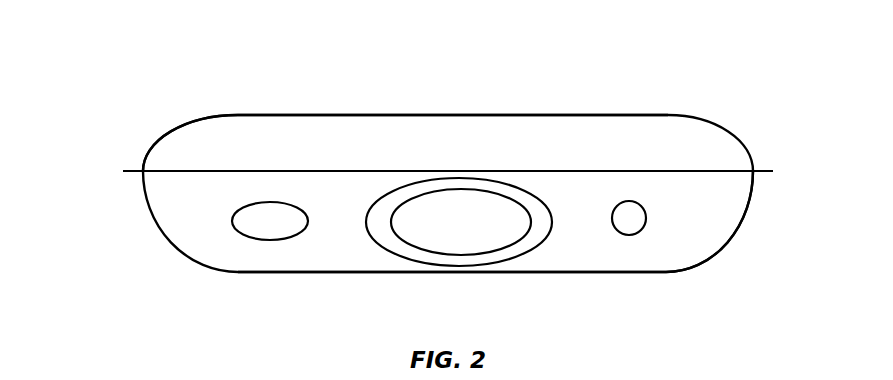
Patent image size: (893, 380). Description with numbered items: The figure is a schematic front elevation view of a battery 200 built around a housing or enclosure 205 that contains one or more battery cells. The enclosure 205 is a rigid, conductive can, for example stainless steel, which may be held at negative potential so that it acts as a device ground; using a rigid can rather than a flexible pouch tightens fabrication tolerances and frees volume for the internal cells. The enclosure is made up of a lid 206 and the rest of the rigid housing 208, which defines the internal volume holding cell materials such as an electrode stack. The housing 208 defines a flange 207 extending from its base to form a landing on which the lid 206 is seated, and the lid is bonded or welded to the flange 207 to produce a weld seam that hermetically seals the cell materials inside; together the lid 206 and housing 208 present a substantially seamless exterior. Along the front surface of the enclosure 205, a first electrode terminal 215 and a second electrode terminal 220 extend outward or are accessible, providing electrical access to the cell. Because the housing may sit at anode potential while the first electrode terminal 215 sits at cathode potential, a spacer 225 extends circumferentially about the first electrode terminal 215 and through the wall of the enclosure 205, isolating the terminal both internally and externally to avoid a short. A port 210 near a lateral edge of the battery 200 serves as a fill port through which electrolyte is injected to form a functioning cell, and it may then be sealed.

The battery 200 is at (107, 90).
The housing or enclosure 205 is at (745, 218).
The lid 206 is at (680, 113).
The flange 207 is at (132, 173).
The housing 208 is at (721, 246).
The port 210 is at (629, 235).
The first electrode terminal 215 is at (468, 189).
The second electrode terminal 220 is at (262, 240).
The spacer 225 is at (527, 190).